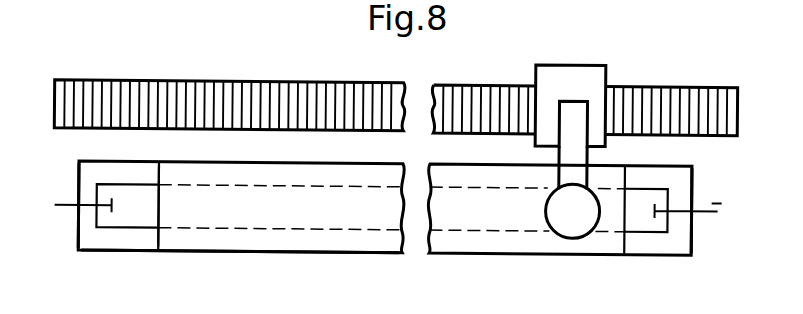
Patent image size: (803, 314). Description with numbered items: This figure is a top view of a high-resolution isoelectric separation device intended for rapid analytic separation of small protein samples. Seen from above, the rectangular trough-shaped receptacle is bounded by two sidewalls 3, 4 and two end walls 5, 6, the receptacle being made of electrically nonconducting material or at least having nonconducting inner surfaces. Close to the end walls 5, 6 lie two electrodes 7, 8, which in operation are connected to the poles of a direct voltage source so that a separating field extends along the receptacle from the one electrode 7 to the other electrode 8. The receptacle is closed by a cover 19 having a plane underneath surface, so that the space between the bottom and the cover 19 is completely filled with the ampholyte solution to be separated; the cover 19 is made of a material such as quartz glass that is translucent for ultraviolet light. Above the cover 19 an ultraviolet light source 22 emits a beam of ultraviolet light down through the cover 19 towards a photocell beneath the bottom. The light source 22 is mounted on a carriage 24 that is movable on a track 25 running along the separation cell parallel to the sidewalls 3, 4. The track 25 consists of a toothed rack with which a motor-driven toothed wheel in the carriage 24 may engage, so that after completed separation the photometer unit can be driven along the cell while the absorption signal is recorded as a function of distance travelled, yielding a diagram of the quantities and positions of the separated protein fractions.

The sidewall 3 is at (135, 170).
The sidewall 4 is at (129, 244).
The end wall 5 is at (86, 229).
The end wall 6 is at (681, 230).
The electrode 7 is at (108, 201).
The electrode 8 is at (673, 202).
The cover 19 is at (206, 217).
The ultraviolet light source 22 is at (578, 229).
The carriage 24 is at (586, 76).
The track 25 is at (694, 79).